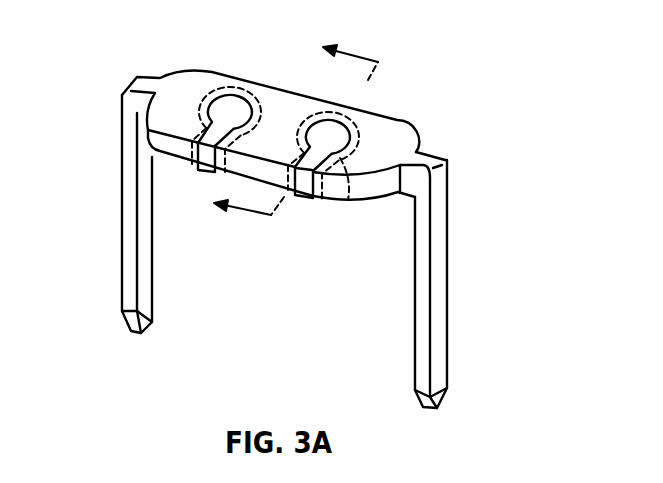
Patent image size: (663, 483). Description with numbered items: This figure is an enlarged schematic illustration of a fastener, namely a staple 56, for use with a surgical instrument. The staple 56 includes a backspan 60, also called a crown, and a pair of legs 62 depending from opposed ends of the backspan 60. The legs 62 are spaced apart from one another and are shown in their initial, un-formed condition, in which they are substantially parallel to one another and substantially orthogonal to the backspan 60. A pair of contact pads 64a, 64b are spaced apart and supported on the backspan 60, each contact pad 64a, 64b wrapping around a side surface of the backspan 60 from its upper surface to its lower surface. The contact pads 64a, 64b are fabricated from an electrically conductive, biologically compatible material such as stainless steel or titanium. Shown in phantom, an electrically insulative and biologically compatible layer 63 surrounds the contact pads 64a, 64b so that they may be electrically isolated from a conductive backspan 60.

The staple 56 is at (279, 211).
The backspan 60 is at (394, 131).
The legs 62 is at (122, 208).
The electrically insulative layer 63 is at (211, 73).
The contact pad 64a is at (238, 98).
The contact pad 64b is at (335, 117).